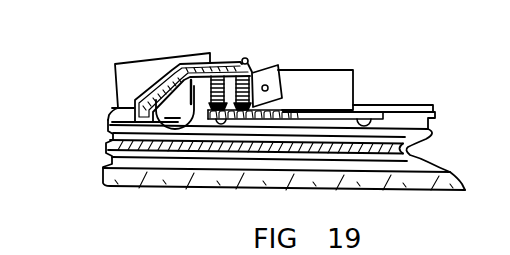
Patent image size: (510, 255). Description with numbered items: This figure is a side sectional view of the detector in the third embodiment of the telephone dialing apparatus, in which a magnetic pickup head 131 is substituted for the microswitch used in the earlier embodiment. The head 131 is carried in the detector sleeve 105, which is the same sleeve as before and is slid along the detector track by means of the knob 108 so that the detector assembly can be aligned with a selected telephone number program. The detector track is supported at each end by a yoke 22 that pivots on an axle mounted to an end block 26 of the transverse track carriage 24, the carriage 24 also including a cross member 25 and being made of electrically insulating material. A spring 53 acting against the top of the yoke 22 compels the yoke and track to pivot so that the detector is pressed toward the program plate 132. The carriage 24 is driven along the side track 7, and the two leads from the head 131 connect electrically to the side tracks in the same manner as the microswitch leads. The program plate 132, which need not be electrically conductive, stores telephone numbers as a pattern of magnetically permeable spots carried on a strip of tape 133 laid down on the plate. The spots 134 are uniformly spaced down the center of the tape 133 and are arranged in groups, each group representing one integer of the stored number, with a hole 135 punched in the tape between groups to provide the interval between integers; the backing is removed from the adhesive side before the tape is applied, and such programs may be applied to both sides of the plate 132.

The side track 7 is at (412, 105).
The yoke 22 is at (270, 87).
The transverse track carriage 24 is at (358, 78).
The cross member 25 is at (268, 121).
The end block 26 is at (298, 70).
The spring 53 is at (243, 59).
The detector sleeve 105 is at (154, 82).
The knob 108 is at (115, 64).
The magnetic pickup head 131 is at (178, 112).
The program plate 132 is at (418, 147).
The strip of tape 133 is at (110, 134).
The spots 134 is at (420, 250).
The hole 135 is at (494, 238).